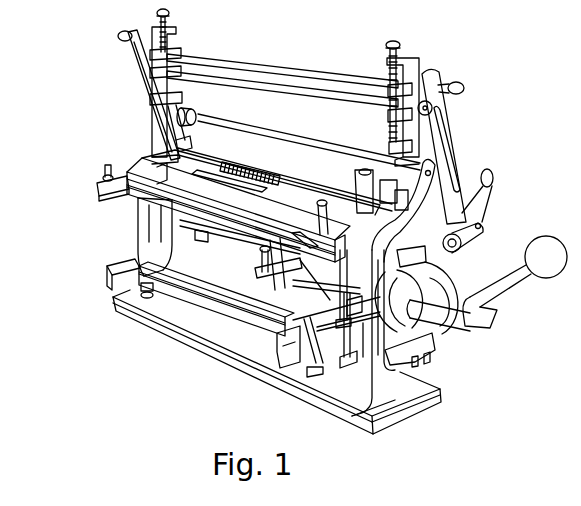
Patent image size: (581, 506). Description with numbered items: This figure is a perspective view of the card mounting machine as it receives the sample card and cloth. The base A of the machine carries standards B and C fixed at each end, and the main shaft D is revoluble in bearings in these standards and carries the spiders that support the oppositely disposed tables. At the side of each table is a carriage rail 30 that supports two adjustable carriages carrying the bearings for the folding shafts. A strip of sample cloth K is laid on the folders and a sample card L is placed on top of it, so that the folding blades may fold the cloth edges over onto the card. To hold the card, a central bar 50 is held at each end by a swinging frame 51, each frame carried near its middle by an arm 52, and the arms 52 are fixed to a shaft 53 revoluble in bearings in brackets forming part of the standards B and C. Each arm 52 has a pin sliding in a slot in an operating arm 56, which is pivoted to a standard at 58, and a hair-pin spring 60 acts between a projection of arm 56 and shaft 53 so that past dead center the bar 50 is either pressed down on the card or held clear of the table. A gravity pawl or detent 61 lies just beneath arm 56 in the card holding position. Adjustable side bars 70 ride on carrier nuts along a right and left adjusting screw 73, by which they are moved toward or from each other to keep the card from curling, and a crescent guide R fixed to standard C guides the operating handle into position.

The base A is at (152, 323).
The standard B is at (147, 222).
The standard C is at (390, 387).
The main shaft D is at (370, 340).
The crescent guide R is at (417, 345).
The sample cloth K is at (235, 182).
The sample card L is at (233, 184).
The carriage rail 30 is at (100, 188).
The central bar 50 is at (208, 65).
The swinging frame 51 is at (154, 30).
The arm 52 is at (432, 128).
The shaft 53 is at (290, 136).
The operating arm 56 is at (452, 150).
The pivot 58 is at (462, 247).
The hair-pin spring 60 is at (493, 178).
The gravity pawl 61 is at (426, 252).
The adjustable side bar 70 is at (356, 105).
The right and left adjusting screw 73 is at (170, 14).